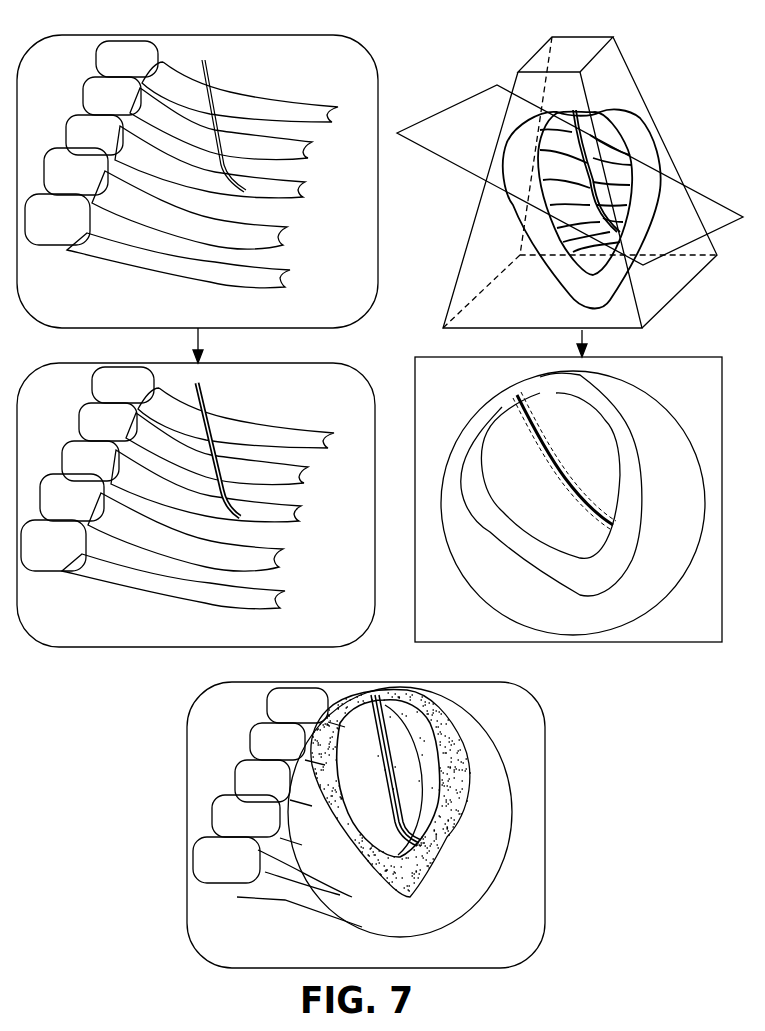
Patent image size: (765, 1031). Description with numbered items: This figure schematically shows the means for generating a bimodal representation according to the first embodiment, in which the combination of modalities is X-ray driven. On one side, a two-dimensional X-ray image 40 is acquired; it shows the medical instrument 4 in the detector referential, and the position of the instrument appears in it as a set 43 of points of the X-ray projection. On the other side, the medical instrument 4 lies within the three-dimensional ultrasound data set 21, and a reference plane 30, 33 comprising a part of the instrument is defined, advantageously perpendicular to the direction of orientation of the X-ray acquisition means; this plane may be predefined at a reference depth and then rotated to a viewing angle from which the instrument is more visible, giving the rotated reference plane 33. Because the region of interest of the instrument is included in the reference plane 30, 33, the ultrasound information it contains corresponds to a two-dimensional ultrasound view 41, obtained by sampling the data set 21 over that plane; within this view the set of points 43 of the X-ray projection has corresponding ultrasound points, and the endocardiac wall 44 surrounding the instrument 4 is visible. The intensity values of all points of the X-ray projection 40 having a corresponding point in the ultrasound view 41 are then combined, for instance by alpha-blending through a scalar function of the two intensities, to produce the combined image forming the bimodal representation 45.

The medical instrument 4 is at (557, 465).
The 3D ultrasound data set 21 is at (641, 53).
The reference plane 30 is at (570, 154).
The rotated reference plane 33 is at (445, 110).
The 2D X-ray image 40 is at (380, 302).
The 2D ultrasound view 41 is at (568, 499).
The set of points of the X-ray projection 43 is at (217, 410).
The endocardiac wall 44 is at (598, 553).
The combined image 45 is at (545, 824).